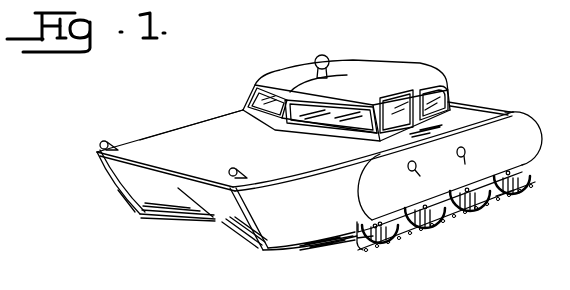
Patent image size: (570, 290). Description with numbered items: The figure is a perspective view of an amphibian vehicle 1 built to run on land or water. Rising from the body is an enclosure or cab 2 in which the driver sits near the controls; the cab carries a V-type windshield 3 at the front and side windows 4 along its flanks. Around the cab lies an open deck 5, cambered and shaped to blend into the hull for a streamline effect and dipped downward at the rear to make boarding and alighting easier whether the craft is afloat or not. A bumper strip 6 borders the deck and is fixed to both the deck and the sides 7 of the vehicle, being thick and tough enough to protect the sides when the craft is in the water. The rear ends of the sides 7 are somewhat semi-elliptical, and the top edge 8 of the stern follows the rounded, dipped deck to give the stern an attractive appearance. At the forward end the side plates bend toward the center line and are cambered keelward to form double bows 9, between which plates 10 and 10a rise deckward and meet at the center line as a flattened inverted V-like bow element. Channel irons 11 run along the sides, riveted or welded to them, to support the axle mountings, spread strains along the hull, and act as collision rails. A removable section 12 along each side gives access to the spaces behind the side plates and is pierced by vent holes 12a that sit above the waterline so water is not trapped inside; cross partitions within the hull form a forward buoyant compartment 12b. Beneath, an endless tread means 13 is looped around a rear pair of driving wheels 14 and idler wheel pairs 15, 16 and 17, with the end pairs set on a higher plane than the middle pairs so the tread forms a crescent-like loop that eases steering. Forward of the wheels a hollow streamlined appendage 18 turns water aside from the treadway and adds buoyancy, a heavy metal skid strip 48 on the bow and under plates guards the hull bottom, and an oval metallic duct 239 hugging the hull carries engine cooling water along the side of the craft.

The amphibian vehicle 1 is at (305, 146).
The cab 2 is at (357, 77).
The V-type windshield 3 is at (257, 93).
The side windows 4 is at (448, 88).
The open deck 5 is at (168, 143).
The bumper strip 6 is at (97, 153).
The sides 7 is at (288, 222).
The stern top edge 8 is at (530, 125).
The double bows 9 is at (107, 180).
The bow plate 10 is at (217, 220).
The bow plate 10a is at (157, 210).
The channel irons 11 is at (395, 214).
The removable section 12 is at (507, 157).
The vent holes 12a is at (436, 169).
The buoyant compartment 12b is at (505, 110).
The endless tread means 13 is at (513, 197).
The rear pair of wheels 14 is at (530, 178).
The idler wheel pair 15 is at (470, 212).
The idler wheel pair 16 is at (440, 232).
The idler wheel pair 17 is at (367, 250).
The hollow streamlined appendages 18 is at (320, 250).
The skid strip 48 is at (123, 207).
The metallic ducts 239 is at (417, 243).